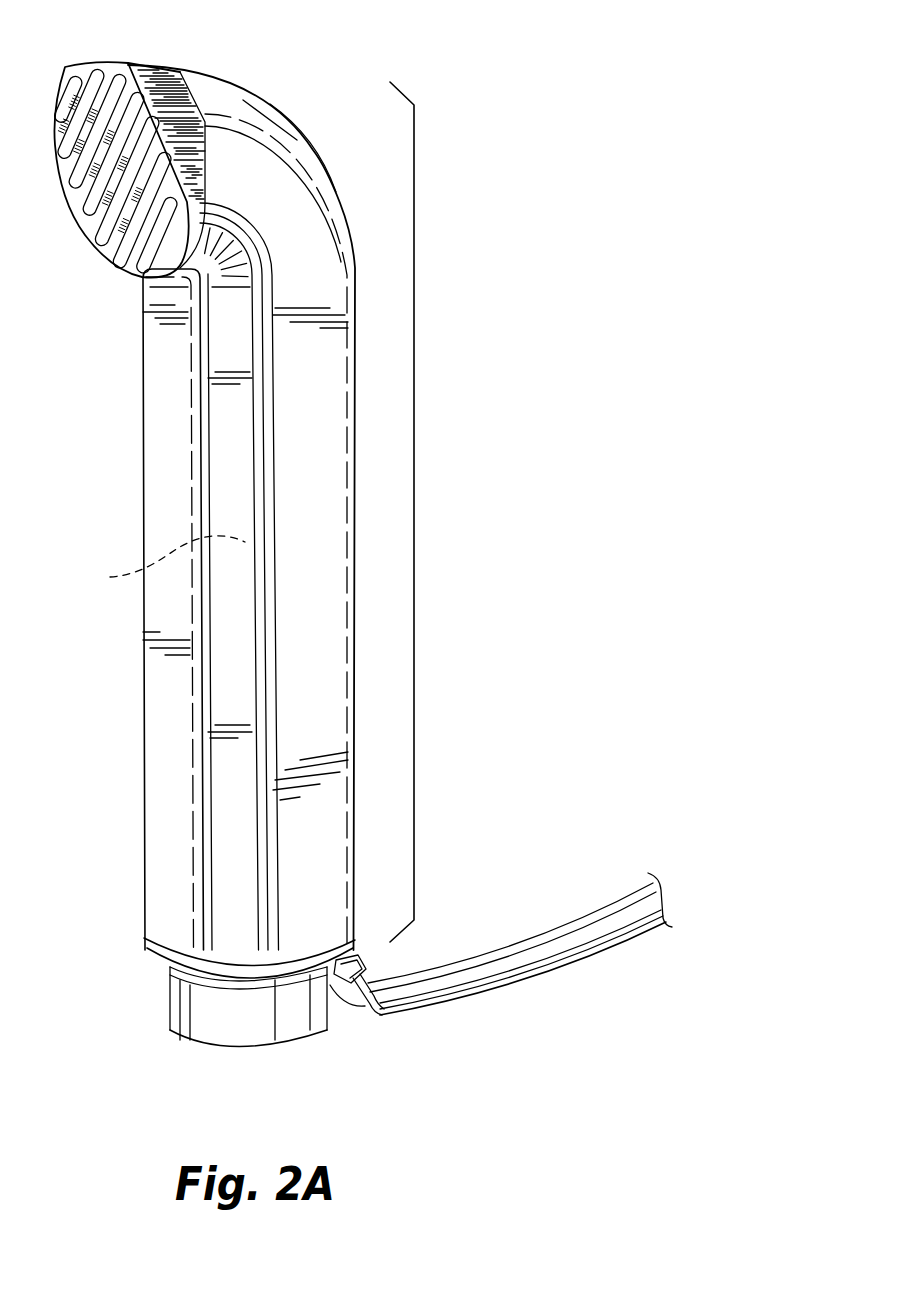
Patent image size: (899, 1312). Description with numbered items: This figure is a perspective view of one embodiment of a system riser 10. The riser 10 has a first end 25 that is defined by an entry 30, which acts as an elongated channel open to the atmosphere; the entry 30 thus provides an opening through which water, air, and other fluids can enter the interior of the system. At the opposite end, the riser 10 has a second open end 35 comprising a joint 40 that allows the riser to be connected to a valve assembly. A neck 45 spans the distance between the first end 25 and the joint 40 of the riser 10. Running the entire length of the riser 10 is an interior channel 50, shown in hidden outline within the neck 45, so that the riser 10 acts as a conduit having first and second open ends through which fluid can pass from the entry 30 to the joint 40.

The riser 10 is at (542, 107).
The first end 25 is at (78, 78).
The entry 30 is at (98, 216).
The second open end 35 is at (180, 1037).
The joint 40 is at (193, 1002).
The neck 45 is at (414, 512).
The interior channel 50 is at (163, 564).